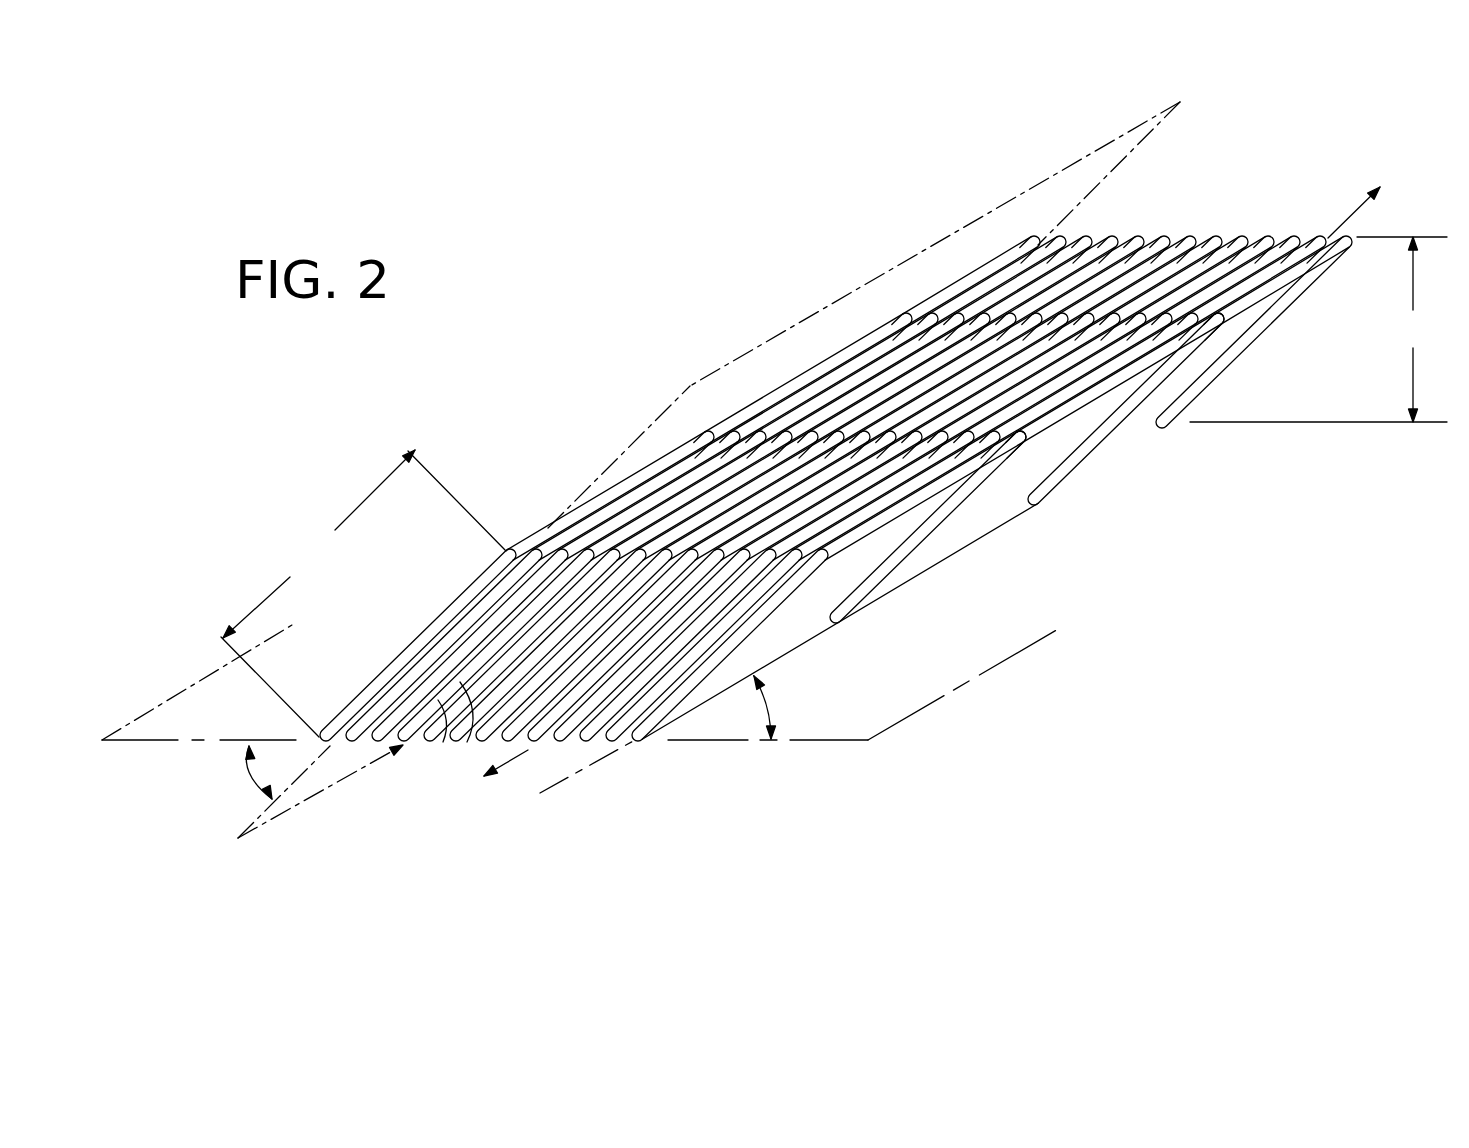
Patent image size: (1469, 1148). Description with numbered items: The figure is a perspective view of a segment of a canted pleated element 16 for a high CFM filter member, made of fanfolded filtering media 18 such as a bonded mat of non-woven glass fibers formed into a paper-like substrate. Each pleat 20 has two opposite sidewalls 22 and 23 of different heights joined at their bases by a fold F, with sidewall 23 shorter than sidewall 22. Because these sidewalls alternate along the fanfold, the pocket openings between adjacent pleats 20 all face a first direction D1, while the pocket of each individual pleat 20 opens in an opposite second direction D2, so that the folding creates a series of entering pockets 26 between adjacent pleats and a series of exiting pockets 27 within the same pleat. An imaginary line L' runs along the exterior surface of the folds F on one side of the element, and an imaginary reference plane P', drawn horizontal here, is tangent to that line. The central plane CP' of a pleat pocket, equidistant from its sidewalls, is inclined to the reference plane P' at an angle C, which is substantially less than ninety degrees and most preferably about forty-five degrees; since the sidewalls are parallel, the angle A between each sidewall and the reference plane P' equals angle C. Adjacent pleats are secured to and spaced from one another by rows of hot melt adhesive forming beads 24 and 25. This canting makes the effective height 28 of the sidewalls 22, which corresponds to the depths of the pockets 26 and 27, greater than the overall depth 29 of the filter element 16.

The canted pleated element 16 is at (878, 262).
The filtering media 18 is at (982, 511).
The pleat 20 is at (620, 528).
The sidewall 22 is at (432, 740).
The sidewall 23 is at (468, 745).
The bead of adhesive 24 is at (1103, 437).
The bead of adhesive 25 is at (913, 552).
The entering pocket 26 is at (1148, 237).
The exiting pocket 27 is at (398, 752).
The effective height 28 is at (363, 593).
The overall depth 29 is at (1318, 329).
The angle A is at (770, 706).
The angle C is at (250, 832).
The central plane CP' is at (461, 586).
The first direction D1 is at (1357, 212).
The second direction D2 is at (522, 762).
The fold F is at (383, 765).
The imaginary line L' is at (597, 801).
The reference plane P' is at (581, 728).